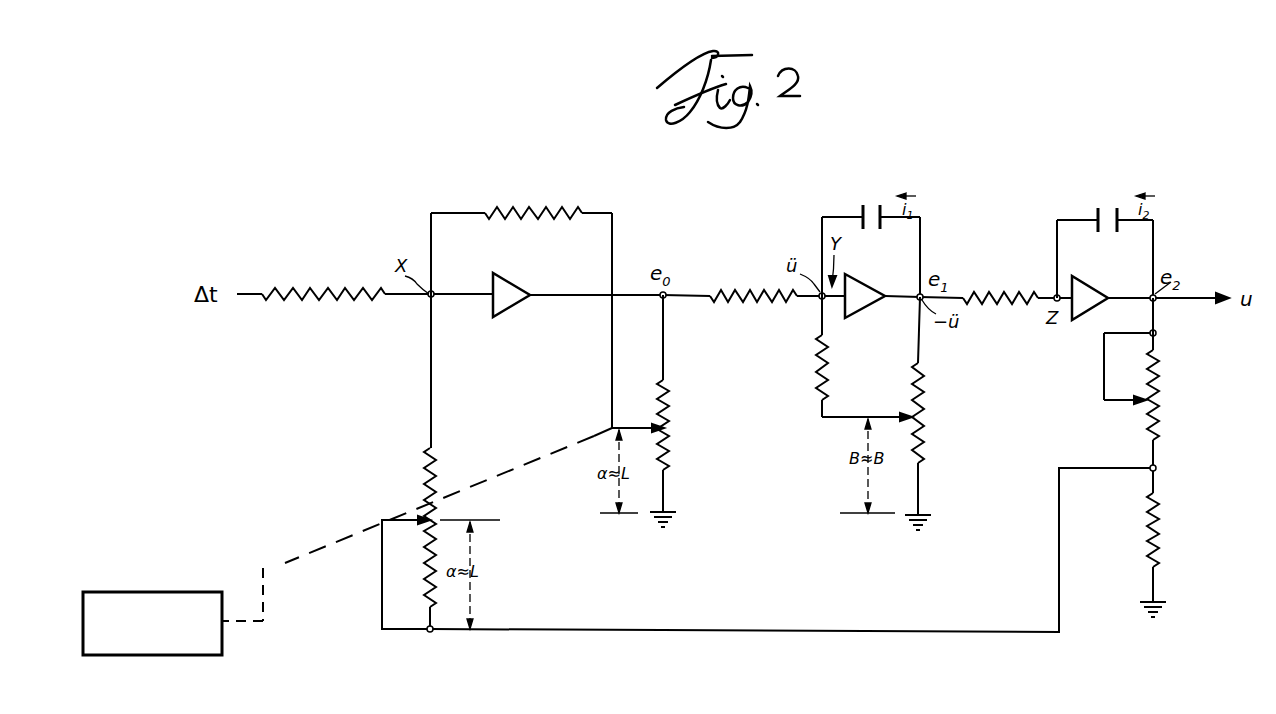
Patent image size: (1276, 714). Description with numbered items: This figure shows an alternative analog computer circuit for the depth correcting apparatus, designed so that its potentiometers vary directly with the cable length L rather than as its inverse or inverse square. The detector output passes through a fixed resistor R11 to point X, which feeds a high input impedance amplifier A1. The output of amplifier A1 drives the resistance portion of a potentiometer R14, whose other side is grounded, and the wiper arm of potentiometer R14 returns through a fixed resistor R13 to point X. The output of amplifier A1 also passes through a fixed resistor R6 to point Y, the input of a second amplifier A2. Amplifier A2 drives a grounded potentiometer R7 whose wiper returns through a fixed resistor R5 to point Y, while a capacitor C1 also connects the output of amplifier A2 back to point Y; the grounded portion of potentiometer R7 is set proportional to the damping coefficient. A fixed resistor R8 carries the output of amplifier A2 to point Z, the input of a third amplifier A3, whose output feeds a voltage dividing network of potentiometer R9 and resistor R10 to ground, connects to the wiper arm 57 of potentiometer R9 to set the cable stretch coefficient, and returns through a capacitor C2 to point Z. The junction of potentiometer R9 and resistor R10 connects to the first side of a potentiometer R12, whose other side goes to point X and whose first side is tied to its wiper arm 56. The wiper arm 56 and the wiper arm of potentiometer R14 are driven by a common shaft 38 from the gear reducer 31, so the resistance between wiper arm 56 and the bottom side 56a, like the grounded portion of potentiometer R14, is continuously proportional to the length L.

The gear reducer 31 is at (152, 590).
The common shaft 38 is at (300, 559).
The wiper arm of potentiometer R12 56 is at (382, 603).
The bottom side of potentiometer R12 56a is at (430, 633).
The wiper arm of potentiometer R9 57 is at (1104, 368).
The fixed resistor R11 is at (318, 296).
The fixed resistor R13 is at (528, 210).
The potentiometer R14 is at (667, 410).
The potentiometer R12 is at (438, 510).
The fixed resistor R6 is at (752, 300).
The fixed resistor R5 is at (827, 363).
The potentiometer R7 is at (924, 396).
The fixed resistor R8 is at (1000, 292).
The potentiometer R9 is at (1159, 376).
The resistor R10 is at (1159, 532).
The capacitor C1 is at (871, 234).
The capacitor C2 is at (1105, 235).
The high input impedance amplifier A1 is at (511, 295).
The high input impedance amplifier A2 is at (865, 296).
The high input impedance amplifier A3 is at (1090, 298).